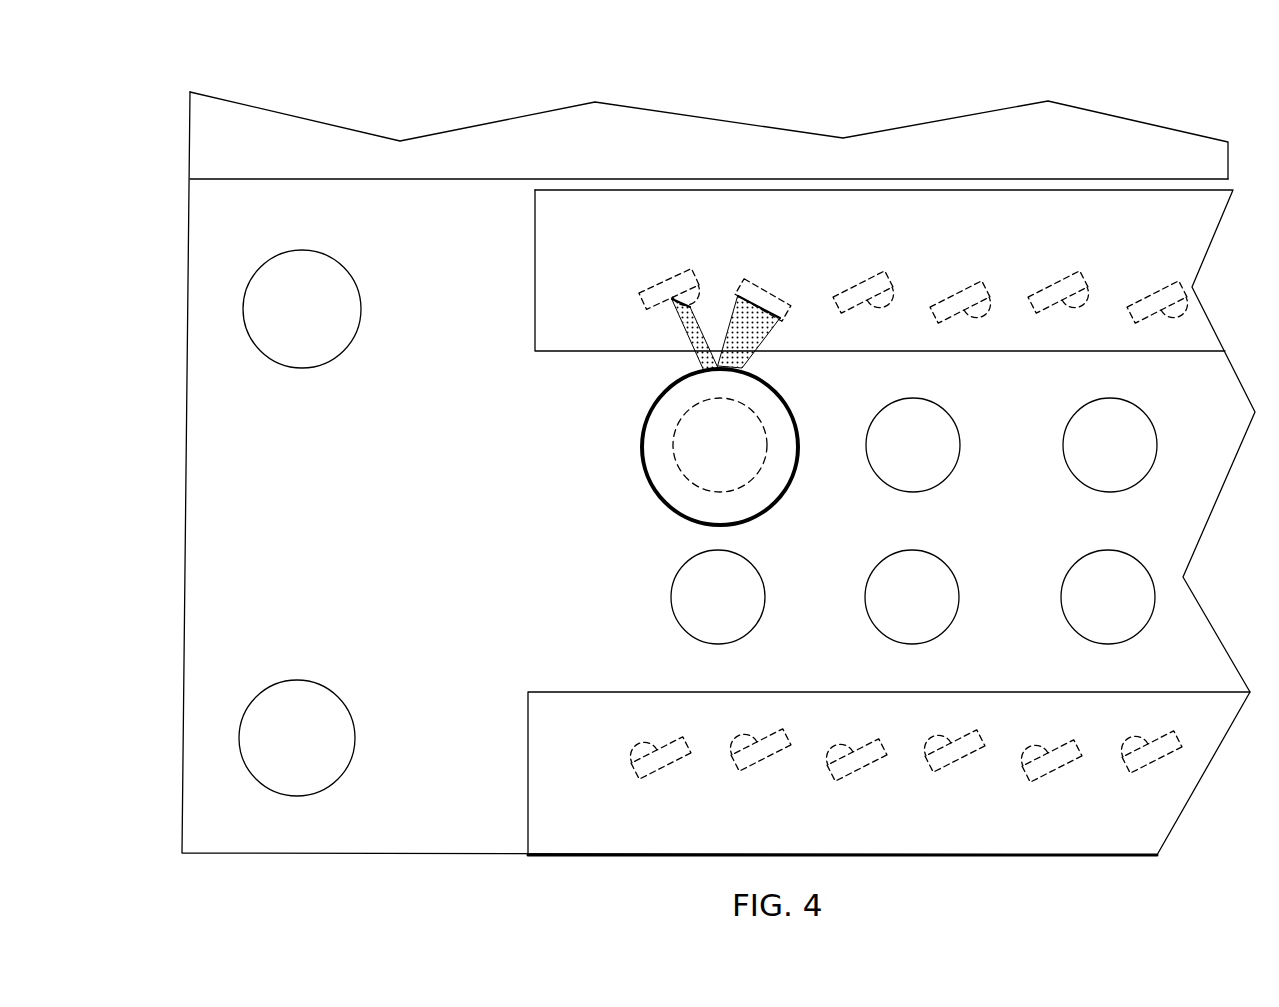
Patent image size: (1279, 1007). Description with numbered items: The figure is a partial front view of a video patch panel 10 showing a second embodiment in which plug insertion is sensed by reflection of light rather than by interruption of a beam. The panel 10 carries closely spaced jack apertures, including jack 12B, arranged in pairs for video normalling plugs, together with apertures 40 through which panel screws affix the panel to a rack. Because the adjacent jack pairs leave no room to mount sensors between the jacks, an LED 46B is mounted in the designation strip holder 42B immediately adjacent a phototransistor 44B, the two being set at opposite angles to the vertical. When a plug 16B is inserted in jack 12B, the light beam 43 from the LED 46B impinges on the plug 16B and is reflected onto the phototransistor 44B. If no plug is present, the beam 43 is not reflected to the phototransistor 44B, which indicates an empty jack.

The patch panel 10 is at (227, 213).
The aperture 40 is at (260, 307).
The plug 16B is at (640, 437).
The jack aperture 12B is at (682, 415).
The LED 46B is at (677, 303).
The light beam 43 is at (702, 345).
The phototransistor 44B is at (765, 307).
The designation strip holder 42B is at (883, 220).